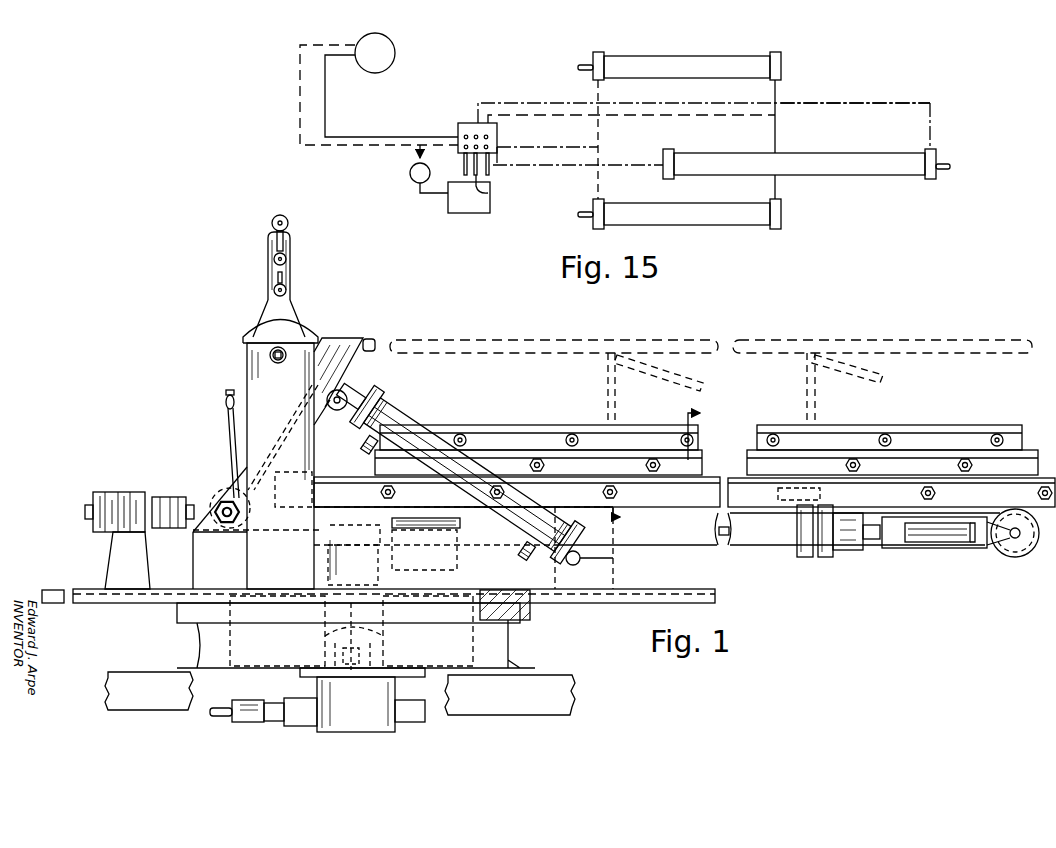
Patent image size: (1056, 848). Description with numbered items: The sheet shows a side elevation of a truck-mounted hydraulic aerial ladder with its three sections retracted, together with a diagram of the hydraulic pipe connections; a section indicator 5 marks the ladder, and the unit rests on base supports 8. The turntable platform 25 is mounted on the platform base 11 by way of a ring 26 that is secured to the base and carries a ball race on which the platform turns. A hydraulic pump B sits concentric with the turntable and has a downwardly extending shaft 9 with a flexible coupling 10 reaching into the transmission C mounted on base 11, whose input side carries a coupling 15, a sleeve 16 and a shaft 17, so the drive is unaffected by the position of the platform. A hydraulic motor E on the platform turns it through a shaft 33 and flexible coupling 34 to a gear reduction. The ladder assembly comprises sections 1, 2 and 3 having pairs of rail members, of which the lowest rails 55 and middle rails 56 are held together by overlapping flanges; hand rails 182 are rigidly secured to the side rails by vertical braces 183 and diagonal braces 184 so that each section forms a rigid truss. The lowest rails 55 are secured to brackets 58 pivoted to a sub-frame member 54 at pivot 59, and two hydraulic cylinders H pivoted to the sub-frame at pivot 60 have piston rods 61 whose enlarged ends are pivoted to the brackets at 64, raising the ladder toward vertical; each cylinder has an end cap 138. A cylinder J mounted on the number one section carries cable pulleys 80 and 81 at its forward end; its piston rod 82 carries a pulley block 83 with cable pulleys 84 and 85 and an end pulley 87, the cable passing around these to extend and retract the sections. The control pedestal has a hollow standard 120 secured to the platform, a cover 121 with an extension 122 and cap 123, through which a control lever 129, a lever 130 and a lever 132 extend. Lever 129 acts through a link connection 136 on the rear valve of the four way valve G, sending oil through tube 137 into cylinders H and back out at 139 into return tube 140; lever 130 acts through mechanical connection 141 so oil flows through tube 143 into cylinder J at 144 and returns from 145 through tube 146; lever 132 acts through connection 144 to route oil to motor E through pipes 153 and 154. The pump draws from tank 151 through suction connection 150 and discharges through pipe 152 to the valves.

In FIG. 1, the number one ladder section 1 is at (517, 492).
In FIG. 1, the ladder section 2 is at (538, 462).
In FIG. 1, the ladder section 3 is at (539, 437).
In FIG. 1, the section line arrows 5 is at (656, 469).
In FIG. 1, the base support 8 is at (340, 693).
In FIG. 1, the shaft 9 is at (336, 636).
In FIG. 1, the flexible coupling 10 is at (351, 631).
In FIG. 1, the platform base 11 is at (185, 636).
In FIG. 1, the coupling 15 is at (282, 700).
In FIG. 1, the shaft sleeve 16 is at (245, 722).
In FIG. 1, the shaft 17 is at (220, 708).
In FIG. 1, the platform 25 is at (652, 589).
In FIG. 1, the ring 26 is at (530, 615).
In FIG. 1, the shaft 33 is at (195, 500).
In FIG. 1, the flexible coupling 34 is at (170, 530).
In FIG. 1, the sub-frame member 54 is at (256, 559).
In FIG. 1, the rail members 55 is at (499, 492).
In FIG. 1, the rail members 56 is at (595, 465).
In FIG. 1, the brackets 58 is at (262, 518).
In FIG. 1, the pivot 59 is at (225, 524).
In FIG. 1, the pivot 60 is at (580, 558).
In FIG. 15, the piston rods 61 is at (598, 52).
In FIG. 1, the piston rods 61 is at (345, 395).
In FIG. 1, the pivot 64 is at (330, 425).
In FIG. 1, the cable pulley 80 is at (355, 540).
In FIG. 15, the cable pulley 81 is at (944, 172).
In FIG. 1, the cable pulley 81 is at (405, 545).
In FIG. 1, the piston rod 82 is at (722, 548).
In FIG. 1, the pulley block 83 is at (931, 544).
In FIG. 1, the cable pulley 84 is at (905, 540).
In FIG. 1, the cable pulley 85 is at (975, 545).
In FIG. 1, the pulley 87 is at (1015, 557).
In FIG. 1, the hollow standard 120 is at (280, 466).
In FIG. 1, the cover 121 is at (314, 335).
In FIG. 1, the extension 122 is at (276, 270).
In FIG. 1, the cap 123 is at (272, 216).
In FIG. 1, the control lever 129 is at (288, 229).
In FIG. 1, the lever 130 is at (287, 258).
In FIG. 1, the lever 132 is at (287, 285).
In FIG. 15, the link connection 136 is at (492, 165).
In FIG. 15, the tube 137 is at (622, 116).
In FIG. 15, the cylinder end cap 138 is at (778, 88).
In FIG. 1, the cylinder end cap 138 is at (526, 551).
In FIG. 15, the cylinder outlet 139 is at (590, 80).
In FIG. 1, the cylinder outlet 139 is at (369, 444).
In FIG. 15, the return tube 140 is at (585, 145).
In FIG. 15, the mechanical connection 141 is at (488, 193).
In FIG. 15, the tube 143 is at (612, 166).
In FIG. 15, the cylinder inlet connection 144 is at (464, 163).
In FIG. 15, the cylinder outlet 145 is at (936, 152).
In FIG. 15, the tube 146 is at (830, 106).
In FIG. 15, the suction connection 150 is at (430, 193).
In FIG. 15, the tank 151 is at (490, 214).
In FIG. 15, the discharge pipe 152 is at (418, 152).
In FIG. 15, the pipe 153 is at (325, 105).
In FIG. 15, the pipe 154 is at (300, 92).
In FIG. 1, the hand rails 182 is at (562, 340).
In FIG. 1, the vertical braces 183 is at (805, 366).
In FIG. 1, the diagonal braces 184 is at (850, 378).